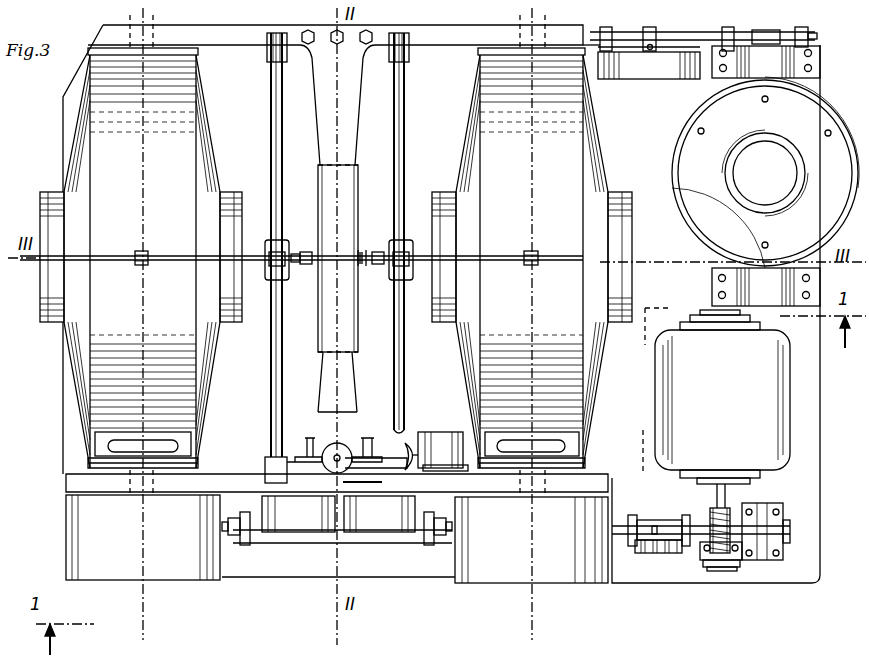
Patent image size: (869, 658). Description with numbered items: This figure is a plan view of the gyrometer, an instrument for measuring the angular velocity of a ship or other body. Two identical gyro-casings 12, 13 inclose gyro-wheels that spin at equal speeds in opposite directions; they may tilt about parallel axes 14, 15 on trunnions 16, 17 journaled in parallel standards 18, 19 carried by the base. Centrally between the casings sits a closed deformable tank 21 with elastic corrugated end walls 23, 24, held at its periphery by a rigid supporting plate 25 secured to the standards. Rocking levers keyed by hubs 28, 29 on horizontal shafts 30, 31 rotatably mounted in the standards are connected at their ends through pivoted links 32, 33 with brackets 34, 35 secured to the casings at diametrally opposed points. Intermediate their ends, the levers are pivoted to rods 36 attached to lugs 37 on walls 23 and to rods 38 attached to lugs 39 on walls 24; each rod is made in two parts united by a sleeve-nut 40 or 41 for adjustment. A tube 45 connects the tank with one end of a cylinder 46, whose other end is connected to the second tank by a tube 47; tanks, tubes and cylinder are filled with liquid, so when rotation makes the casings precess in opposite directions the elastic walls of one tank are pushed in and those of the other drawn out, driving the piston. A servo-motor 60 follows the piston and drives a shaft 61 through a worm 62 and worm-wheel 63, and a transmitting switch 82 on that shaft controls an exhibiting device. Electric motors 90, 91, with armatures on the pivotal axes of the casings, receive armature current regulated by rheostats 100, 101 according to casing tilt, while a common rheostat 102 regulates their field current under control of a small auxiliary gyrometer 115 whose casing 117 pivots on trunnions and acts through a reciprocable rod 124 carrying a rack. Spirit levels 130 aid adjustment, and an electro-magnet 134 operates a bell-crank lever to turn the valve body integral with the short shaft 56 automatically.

The gyro-casing 12 is at (108, 150).
The gyro-casing 13 is at (540, 170).
The tilt axis 14 is at (143, 310).
The tilt axis 15 is at (531, 310).
The trunnions 16 is at (150, 36).
The trunnions 17 is at (520, 36).
The standard 18 is at (210, 472).
The standard 19 is at (233, 42).
The deformable tank 21 is at (318, 330).
The elastic end walls 23 is at (318, 305).
The elastic end walls 24 is at (358, 330).
The supporting plate 25 is at (343, 103).
The hub 28 is at (270, 245).
The hub 29 is at (400, 245).
The shaft 30 is at (271, 147).
The shaft 31 is at (405, 150).
The pivoted links 32 is at (170, 262).
The pivoted links 33 is at (510, 262).
The brackets 34 is at (145, 251).
The brackets 35 is at (530, 251).
The rods 36 is at (296, 264).
The lugs 37 is at (312, 268).
The rods 38 is at (362, 252).
The lugs 39 is at (364, 266).
The sleeve-nut 40 is at (305, 252).
The sleeve-nut 41 is at (378, 252).
The tube 45 is at (300, 452).
The cylinder 46 is at (318, 536).
The tube 47 is at (373, 442).
The short shaft 56 is at (335, 457).
The servo-motor 60 is at (770, 412).
The shaft 61 is at (628, 548).
The worm 62 is at (732, 515).
The worm-wheel 63 is at (712, 512).
The transmitting switch 82 is at (666, 555).
The electric motor 90 is at (90, 565).
The electric motor 91 is at (478, 565).
The rheostat 100 is at (292, 548).
The rheostat 101 is at (388, 548).
The rheostat 102 is at (632, 66).
The auxiliary gyrometer 115 is at (737, 176).
The casing of auxiliary gyrometer 117 is at (720, 213).
The reciprocable rod 124 is at (676, 40).
The spirit levels 130 is at (120, 440).
The electro-magnet 134 is at (436, 432).